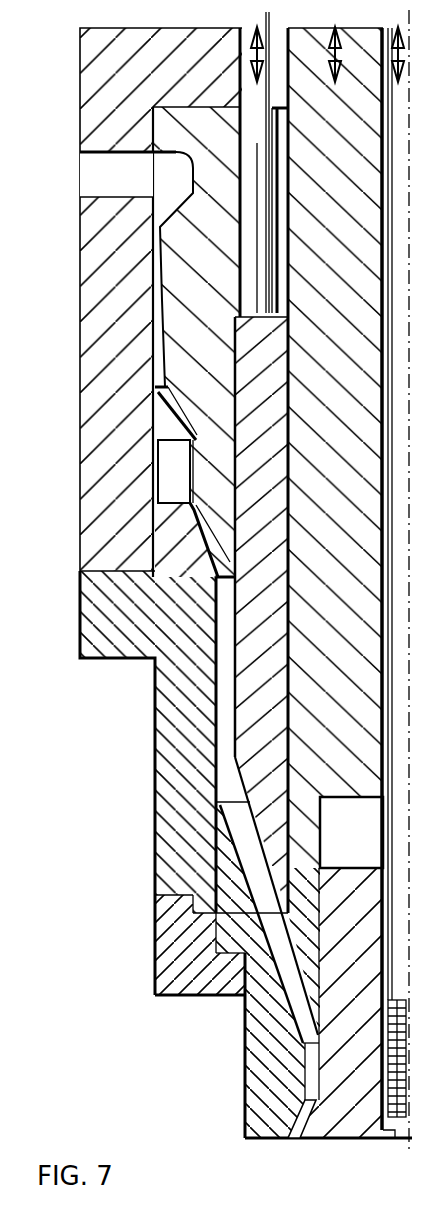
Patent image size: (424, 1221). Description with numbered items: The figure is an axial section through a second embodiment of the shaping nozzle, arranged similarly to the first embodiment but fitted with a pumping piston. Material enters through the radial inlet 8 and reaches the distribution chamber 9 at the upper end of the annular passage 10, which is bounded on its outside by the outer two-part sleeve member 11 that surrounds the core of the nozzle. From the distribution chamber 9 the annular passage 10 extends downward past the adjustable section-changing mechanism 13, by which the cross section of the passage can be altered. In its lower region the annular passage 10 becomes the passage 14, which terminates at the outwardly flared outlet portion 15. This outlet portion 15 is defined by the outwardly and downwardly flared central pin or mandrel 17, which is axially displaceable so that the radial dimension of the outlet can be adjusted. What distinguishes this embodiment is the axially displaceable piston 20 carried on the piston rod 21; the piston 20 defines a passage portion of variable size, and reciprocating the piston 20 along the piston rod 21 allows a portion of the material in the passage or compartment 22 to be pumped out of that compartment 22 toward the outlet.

The radial inlet 8 is at (100, 170).
The distribution chamber 9 is at (175, 170).
The annular passage 10 is at (158, 254).
The outer two-part sleeve member 11 is at (102, 291).
The adjustable section-changing mechanism 13 is at (172, 468).
The passage 14 is at (205, 530).
The outwardly flared outlet portion 15 is at (302, 1127).
The central pin or mandrel 17 is at (357, 1127).
The piston 20 is at (258, 362).
The piston rod 21 is at (248, 47).
The passage or compartment 22 is at (226, 595).